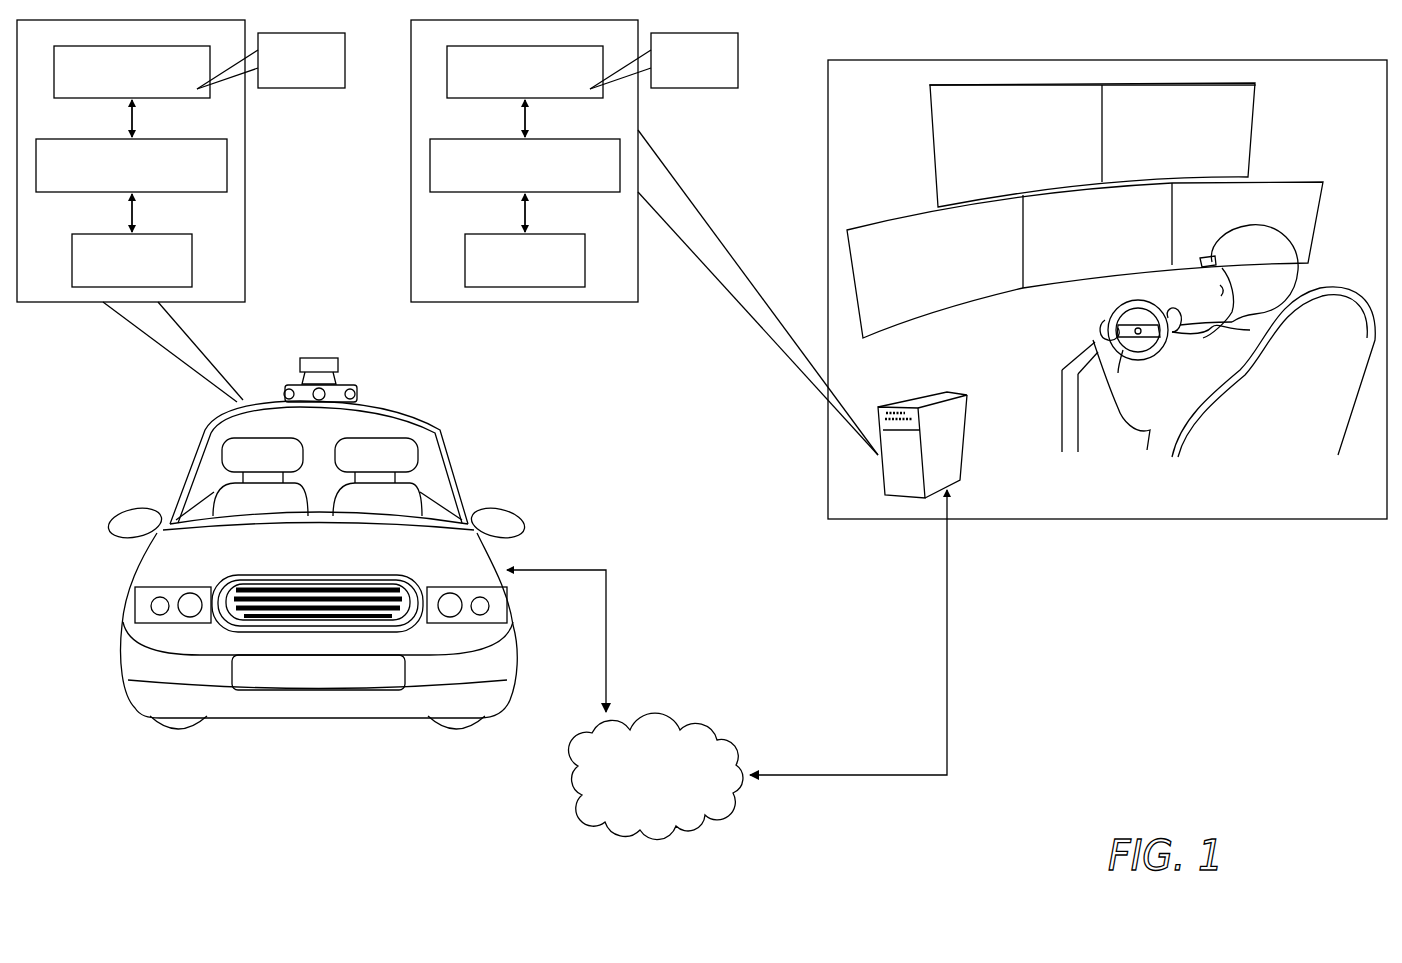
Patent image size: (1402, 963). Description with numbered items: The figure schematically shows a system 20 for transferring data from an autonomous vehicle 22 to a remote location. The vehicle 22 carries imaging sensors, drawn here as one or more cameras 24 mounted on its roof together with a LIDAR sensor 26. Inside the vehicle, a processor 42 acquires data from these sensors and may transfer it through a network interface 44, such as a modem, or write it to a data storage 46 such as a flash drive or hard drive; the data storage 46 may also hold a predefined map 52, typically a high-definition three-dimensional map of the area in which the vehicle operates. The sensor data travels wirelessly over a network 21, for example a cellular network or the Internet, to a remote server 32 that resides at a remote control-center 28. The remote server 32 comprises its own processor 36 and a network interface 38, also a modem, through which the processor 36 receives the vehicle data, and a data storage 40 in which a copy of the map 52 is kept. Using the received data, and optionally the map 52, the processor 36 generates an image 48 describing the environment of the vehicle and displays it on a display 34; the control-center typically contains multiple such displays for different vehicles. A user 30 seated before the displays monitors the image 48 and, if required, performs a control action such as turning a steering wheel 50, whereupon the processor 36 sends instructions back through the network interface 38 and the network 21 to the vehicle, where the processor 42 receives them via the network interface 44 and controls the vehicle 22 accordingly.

The system 20 is at (1264, 47).
The network 21 is at (652, 712).
The autonomous vehicle 22 is at (160, 567).
The cameras 24 is at (361, 394).
The LIDAR sensor 26 is at (312, 358).
The remote control-center 28 is at (1222, 520).
The user 30 is at (1268, 225).
The remote server 32 is at (900, 497).
The display 34 is at (884, 220).
The processor 36 is at (430, 170).
The network interface 38 is at (528, 287).
The data storage 40 is at (446, 70).
The processor 42 is at (228, 165).
The network interface 44 is at (192, 257).
The data storage 46 is at (168, 98).
The image 48 is at (951, 272).
The steering wheel 50 is at (1112, 307).
The map 52 is at (345, 60).